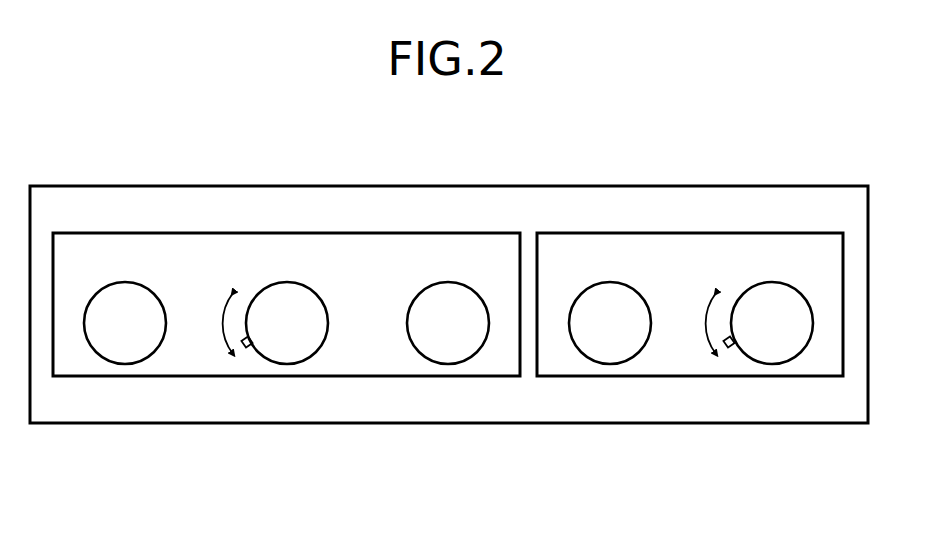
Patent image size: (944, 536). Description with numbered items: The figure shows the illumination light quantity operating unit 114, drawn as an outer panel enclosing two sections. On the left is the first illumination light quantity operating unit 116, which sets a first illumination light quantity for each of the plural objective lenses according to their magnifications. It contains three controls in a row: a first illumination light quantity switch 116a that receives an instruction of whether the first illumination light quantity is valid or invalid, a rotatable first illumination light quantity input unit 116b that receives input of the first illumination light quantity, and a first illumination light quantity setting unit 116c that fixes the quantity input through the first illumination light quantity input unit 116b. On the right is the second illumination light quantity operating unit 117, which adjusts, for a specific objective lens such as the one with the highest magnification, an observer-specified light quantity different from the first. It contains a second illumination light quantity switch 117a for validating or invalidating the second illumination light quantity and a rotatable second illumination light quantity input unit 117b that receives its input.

The illumination light quantity operating unit 114 is at (830, 186).
The first illumination light quantity operating unit 116 is at (88, 233).
The first illumination light quantity switch 116a is at (126, 346).
The first illumination light quantity input unit 116b is at (287, 346).
The first illumination light quantity setting unit 116c is at (448, 346).
The second illumination light quantity operating unit 117 is at (570, 233).
The second illumination light quantity switch 117a is at (610, 346).
The second illumination light quantity input unit 117b is at (772, 346).